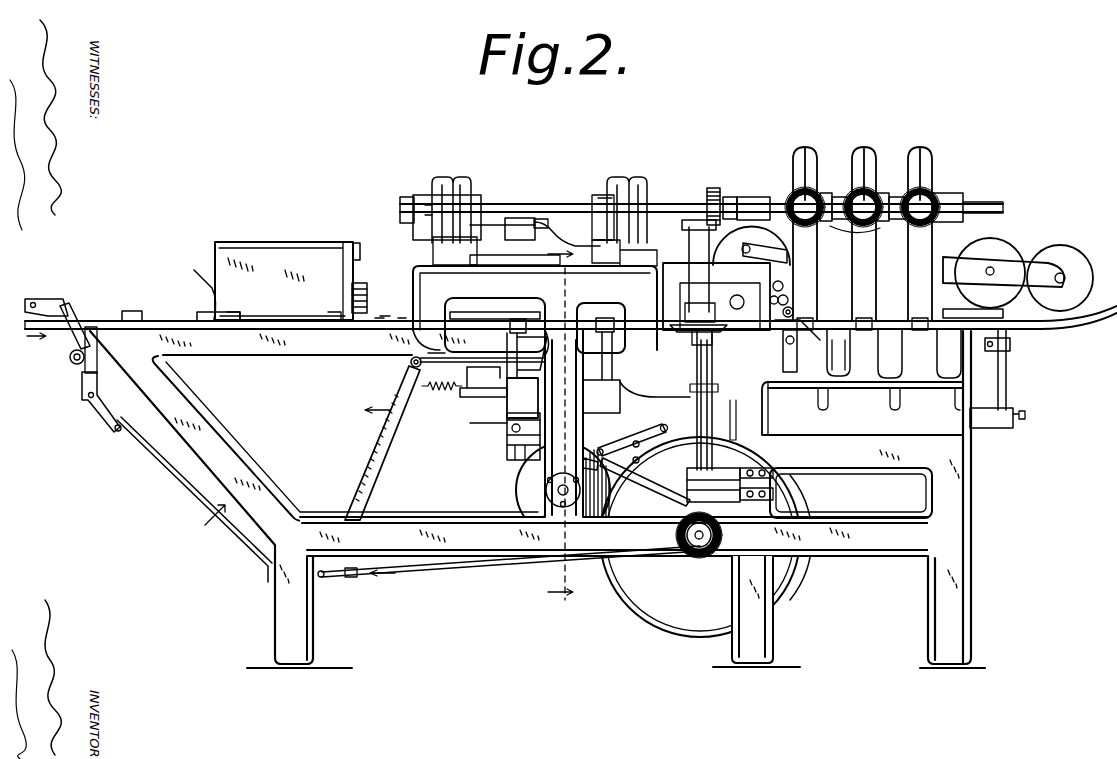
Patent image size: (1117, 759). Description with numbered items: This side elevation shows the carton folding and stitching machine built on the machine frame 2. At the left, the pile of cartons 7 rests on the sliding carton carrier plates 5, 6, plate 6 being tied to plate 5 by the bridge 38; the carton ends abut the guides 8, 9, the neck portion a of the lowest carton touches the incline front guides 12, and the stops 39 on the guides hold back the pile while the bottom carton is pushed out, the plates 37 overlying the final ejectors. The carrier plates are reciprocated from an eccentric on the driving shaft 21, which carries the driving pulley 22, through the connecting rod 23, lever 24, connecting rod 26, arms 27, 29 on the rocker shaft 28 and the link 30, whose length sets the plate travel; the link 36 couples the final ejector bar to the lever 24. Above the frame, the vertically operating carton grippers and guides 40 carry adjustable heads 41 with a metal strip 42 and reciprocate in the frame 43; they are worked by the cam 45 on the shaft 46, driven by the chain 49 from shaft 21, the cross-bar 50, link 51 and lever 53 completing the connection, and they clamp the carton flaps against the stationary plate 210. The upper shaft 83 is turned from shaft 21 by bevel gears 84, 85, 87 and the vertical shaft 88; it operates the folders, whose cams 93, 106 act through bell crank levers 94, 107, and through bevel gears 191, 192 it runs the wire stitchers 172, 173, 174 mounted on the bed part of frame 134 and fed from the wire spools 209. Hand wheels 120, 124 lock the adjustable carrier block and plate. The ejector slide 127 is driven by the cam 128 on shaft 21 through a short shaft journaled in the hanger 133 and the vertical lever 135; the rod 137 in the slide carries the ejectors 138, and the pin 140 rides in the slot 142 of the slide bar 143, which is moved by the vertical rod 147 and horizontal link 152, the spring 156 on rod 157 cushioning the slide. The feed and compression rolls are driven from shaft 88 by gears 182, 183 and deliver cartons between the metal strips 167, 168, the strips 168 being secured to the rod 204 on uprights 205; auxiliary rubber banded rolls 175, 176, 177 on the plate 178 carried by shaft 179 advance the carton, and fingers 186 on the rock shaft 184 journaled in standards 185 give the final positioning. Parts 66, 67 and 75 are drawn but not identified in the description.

The machine frame 2 is at (505, 467).
The carton carrier plate 5 is at (560, 424).
The carton carrier plate 6 is at (168, 318).
The cartons 7 is at (359, 286).
The guide 8 is at (25, 322).
The guide 9 is at (284, 281).
The incline front guides 12 is at (207, 280).
The driving shaft 21 is at (699, 548).
The driving pulley 22 is at (780, 578).
The connecting rod 23 is at (405, 571).
The lever 24 is at (368, 458).
The connecting rod 26 is at (150, 447).
The arm 27 is at (82, 382).
The rocker shaft 28 is at (70, 357).
The arm 29 is at (75, 318).
The link 30 is at (52, 301).
The link 36 is at (409, 362).
The plates 37 is at (400, 313).
The bridge 38 is at (131, 311).
The stops 39 is at (360, 256).
The carton grippers and carton guides 40 is at (507, 352).
The adjustable heads 41 is at (522, 322).
The metal strip 42 is at (445, 351).
The frame 43 is at (522, 398).
The cam 45 is at (520, 497).
The shaft 46 is at (545, 486).
The chain 49 is at (656, 484).
The cross-bar 50 is at (507, 428).
The link 51 is at (662, 415).
The lever 53 is at (593, 460).
The bevel gear 66 is at (718, 195).
The collar 67 is at (698, 220).
The frame rib 75 is at (462, 360).
The upper shaft 83 is at (572, 198).
The bevel gear 84 is at (692, 548).
The bevel gear 85 is at (676, 524).
The bevel gear 87 is at (697, 220).
The vertical shaft 88 is at (718, 388).
The cam 93 is at (446, 180).
The bell crank lever 94 is at (432, 247).
The cam 106 is at (620, 178).
The bell crank lever 107 is at (545, 219).
The hand wheels 120 is at (515, 218).
The hand wheels 124 is at (597, 195).
The slide 127 is at (697, 390).
The cam 128 is at (714, 560).
The hanger 133 is at (766, 469).
The bed part of the frame 134 is at (880, 390).
The vertical lever 135 is at (705, 452).
The rod 137 is at (601, 396).
The ejectors 138 is at (542, 320).
The pin 140 is at (628, 393).
The slot 142 is at (490, 398).
The slide bar 143 is at (467, 378).
The vertical rod 147 is at (736, 412).
The horizontal link 152 is at (625, 427).
The spring 156 is at (443, 395).
The rod 157 is at (470, 425).
The metal strip 167 is at (1000, 312).
The metal strips 168 is at (1051, 322).
The wire stitching machine 172 is at (920, 228).
The wire stitching machine 173 is at (863, 228).
The wire stitching machine 174 is at (805, 228).
The auxiliary rubber banded roll 175 is at (800, 288).
The auxiliary rubber banded roll 176 is at (796, 312).
The lower auxiliary roll 177 is at (815, 330).
The plate 178 is at (790, 300).
The shaft 179 is at (784, 286).
The gear 182 is at (720, 312).
The gear 183 is at (722, 345).
The rock shaft 184 is at (878, 364).
The standards 185 is at (797, 360).
The carton locators 186 is at (850, 360).
The bevel gear 191 is at (872, 226).
The bevel gear 192 is at (915, 192).
The rod 204 is at (990, 352).
The uprights 205 is at (1007, 376).
The spools 209 is at (1030, 246).
The stationary plate 210 is at (515, 310).
The end flap a is at (386, 295).